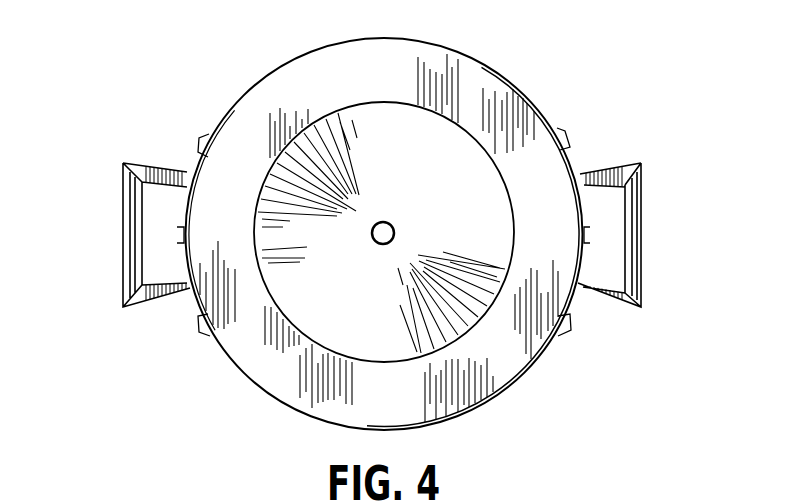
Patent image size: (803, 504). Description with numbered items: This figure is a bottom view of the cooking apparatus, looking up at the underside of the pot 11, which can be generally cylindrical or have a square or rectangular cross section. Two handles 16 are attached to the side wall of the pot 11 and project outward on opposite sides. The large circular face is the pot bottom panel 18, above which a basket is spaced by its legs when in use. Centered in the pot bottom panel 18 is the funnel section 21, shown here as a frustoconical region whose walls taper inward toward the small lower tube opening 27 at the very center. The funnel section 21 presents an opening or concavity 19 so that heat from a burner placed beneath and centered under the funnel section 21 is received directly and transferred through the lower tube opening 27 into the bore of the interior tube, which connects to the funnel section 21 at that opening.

The pot 11 is at (242, 368).
The handles 16 is at (122, 253).
The pot bottom panel 18 is at (260, 107).
The opening or concavity 19 is at (450, 198).
The funnel section 21 is at (346, 312).
The lower tube opening 27 is at (388, 228).